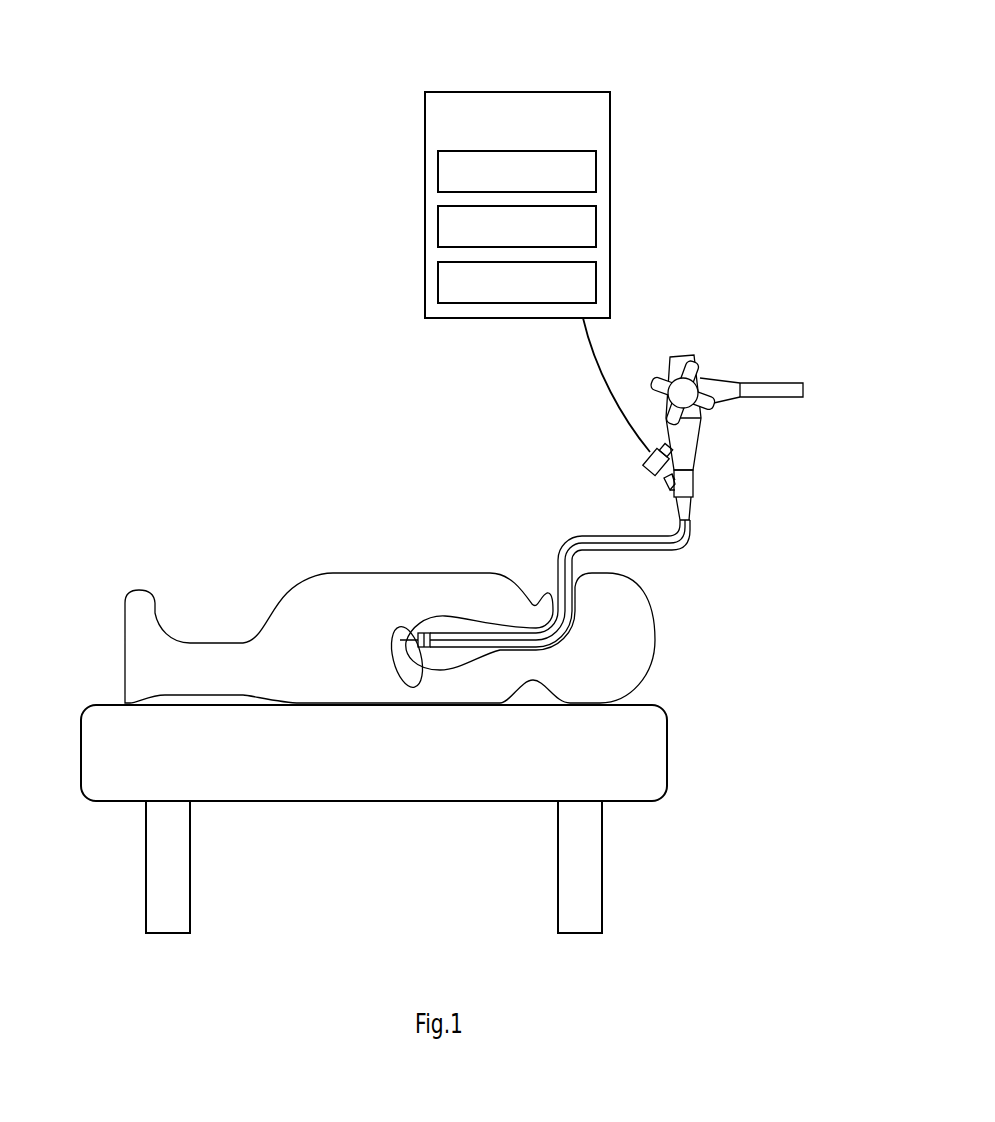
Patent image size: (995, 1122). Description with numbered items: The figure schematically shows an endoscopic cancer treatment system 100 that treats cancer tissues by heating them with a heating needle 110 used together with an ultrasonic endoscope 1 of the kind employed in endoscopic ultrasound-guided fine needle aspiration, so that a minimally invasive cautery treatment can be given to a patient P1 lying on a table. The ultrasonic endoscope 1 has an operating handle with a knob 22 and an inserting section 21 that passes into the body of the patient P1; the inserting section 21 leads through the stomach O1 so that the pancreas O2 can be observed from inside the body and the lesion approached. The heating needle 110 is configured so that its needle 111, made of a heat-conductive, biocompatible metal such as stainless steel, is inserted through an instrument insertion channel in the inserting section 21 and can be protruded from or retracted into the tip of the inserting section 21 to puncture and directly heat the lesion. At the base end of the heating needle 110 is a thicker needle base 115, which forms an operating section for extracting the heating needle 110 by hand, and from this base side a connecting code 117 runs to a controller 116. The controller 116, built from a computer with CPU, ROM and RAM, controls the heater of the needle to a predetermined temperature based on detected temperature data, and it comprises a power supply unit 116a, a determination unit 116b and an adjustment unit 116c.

The endoscopic cancer treatment system 100 is at (786, 116).
The ultrasonic endoscope 1 is at (601, 457).
The operation knob 22 is at (687, 395).
The inserting section 21 is at (558, 563).
The needle 111 is at (442, 620).
The heating needle 110 is at (634, 475).
The needle base 115 is at (642, 458).
The controller 116 is at (425, 110).
The power supply unit 116a is at (438, 172).
The determination unit 116b is at (438, 228).
The adjustment unit 116c is at (438, 284).
The connecting code 117 is at (603, 378).
The patient P1 is at (638, 643).
The stomach O1 is at (443, 662).
The pancreas O2 is at (403, 663).